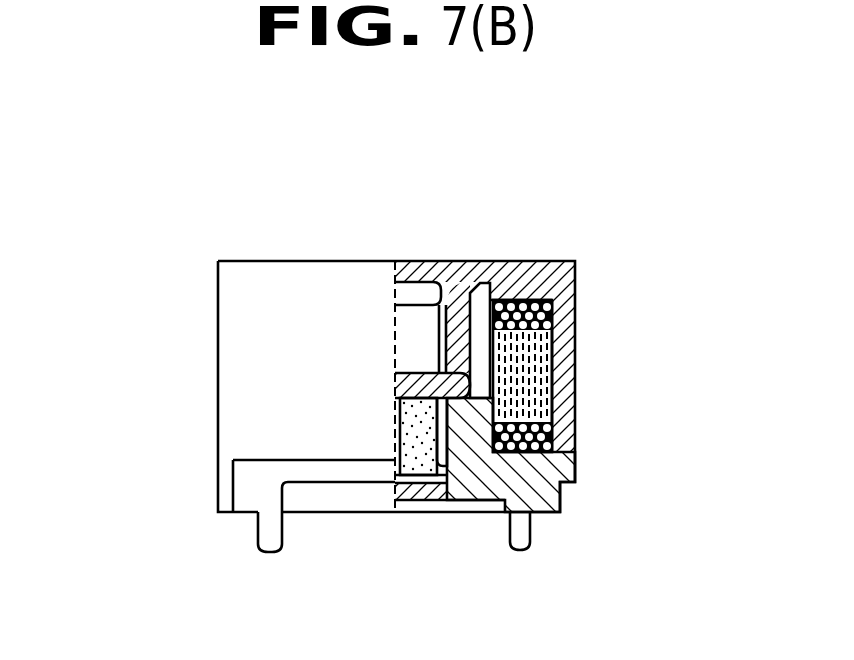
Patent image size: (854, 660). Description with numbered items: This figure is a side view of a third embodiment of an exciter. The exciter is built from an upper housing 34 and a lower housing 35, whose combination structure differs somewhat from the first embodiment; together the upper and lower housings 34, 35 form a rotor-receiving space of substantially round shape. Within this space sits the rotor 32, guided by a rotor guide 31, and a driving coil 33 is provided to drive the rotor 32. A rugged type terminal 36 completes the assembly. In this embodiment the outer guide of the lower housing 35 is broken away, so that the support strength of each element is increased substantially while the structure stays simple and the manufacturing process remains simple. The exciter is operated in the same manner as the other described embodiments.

The rotor guide 31 is at (455, 298).
The rotor 32 is at (405, 432).
The driving coil 33 is at (547, 318).
The upper housing 34 is at (537, 277).
The lower housing 35 is at (547, 477).
The rugged type terminal 36 is at (272, 492).